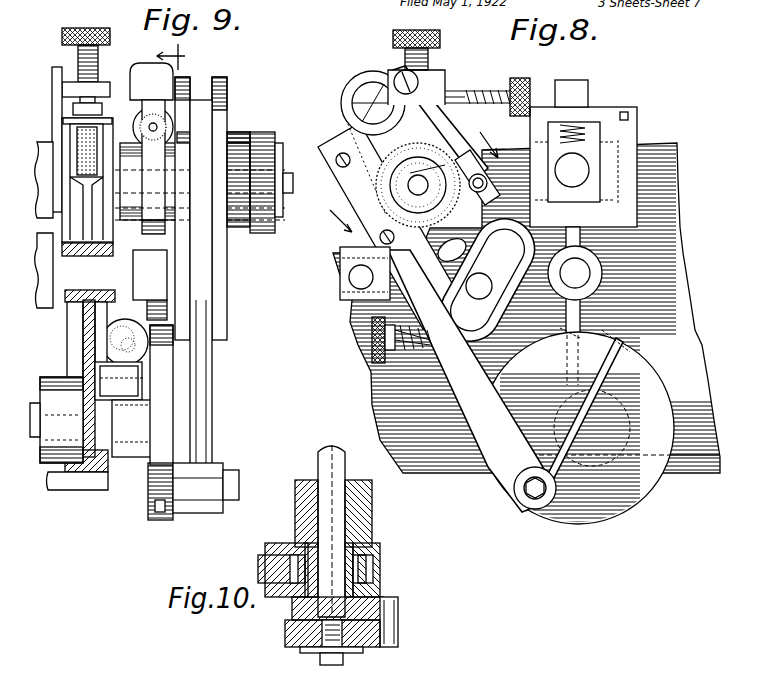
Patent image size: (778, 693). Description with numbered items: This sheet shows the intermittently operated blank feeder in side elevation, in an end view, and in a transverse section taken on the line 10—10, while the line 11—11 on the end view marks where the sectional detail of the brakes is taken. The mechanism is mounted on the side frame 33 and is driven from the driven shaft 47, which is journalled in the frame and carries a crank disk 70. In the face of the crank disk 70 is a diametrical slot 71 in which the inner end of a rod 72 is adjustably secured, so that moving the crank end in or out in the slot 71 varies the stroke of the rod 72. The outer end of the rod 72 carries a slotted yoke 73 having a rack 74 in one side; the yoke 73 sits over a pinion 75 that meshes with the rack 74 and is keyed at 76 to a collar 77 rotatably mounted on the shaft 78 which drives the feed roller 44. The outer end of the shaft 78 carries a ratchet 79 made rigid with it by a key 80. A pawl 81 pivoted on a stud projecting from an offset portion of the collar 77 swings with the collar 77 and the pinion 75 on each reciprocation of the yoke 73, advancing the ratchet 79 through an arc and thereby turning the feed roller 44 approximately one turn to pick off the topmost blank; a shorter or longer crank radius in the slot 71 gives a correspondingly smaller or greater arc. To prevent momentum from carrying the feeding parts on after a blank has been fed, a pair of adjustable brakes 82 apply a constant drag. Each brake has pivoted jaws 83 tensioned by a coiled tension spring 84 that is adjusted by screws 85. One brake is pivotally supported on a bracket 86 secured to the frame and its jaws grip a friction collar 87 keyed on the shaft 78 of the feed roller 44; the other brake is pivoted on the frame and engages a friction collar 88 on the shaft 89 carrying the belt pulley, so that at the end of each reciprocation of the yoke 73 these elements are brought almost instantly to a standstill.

In FIG. 8, the section line 10— 10 is at (412, 185).
In FIG. 9, the section line 11— 11 is at (176, 236).
In FIG. 9, the side frame 33 is at (110, 470).
In FIG. 8, the side frame 33 is at (452, 462).
In FIG. 9, the feed roller 44 is at (45, 142).
In FIG. 9, the driven shaft 47 is at (35, 400).
In FIG. 8, the driven shaft 47 is at (600, 425).
In FIG. 9, the crank disk 70 is at (162, 520).
In FIG. 8, the crank disk 70 is at (598, 510).
In FIG. 9, the diametrical slot 71 is at (160, 503).
In FIG. 8, the diametrical slot 71 is at (622, 352).
In FIG. 9, the rod 72 is at (212, 400).
In FIG. 8, the rod 72 is at (500, 455).
In FIG. 9, the slotted yoke 73 is at (228, 92).
In FIG. 8, the slotted yoke 73 is at (370, 85).
In FIG. 10, the slotted yoke 73 is at (383, 590).
In FIG. 8, the rack 74 is at (340, 142).
In FIG. 10, the rack 74 is at (258, 565).
In FIG. 8, the pinion 75 is at (400, 100).
In FIG. 10, the pinion 75 is at (378, 566).
In FIG. 10, the key 76 is at (372, 556).
In FIG. 9, the collar 77 is at (237, 132).
In FIG. 10, the collar 77 is at (292, 612).
In FIG. 10, the shaft 78 is at (325, 467).
In FIG. 9, the ratchet 79 is at (262, 130).
In FIG. 8, the ratchet 79 is at (360, 196).
In FIG. 10, the ratchet 79 is at (370, 650).
In FIG. 8, the key 80 is at (380, 88).
In FIG. 10, the key 80 is at (350, 653).
In FIG. 8, the pawl 81 is at (455, 130).
In FIG. 10, the pawl 81 is at (398, 635).
In FIG. 9, the adjustable brakes 82 is at (167, 230).
In FIG. 8, the adjustable brakes 82 is at (535, 268).
In FIG. 8, the pivoted jaws 83 is at (360, 274).
In FIG. 8, the coiled tension spring 84 is at (410, 350).
In FIG. 9, the screws 85 is at (102, 343).
In FIG. 8, the screws 85 is at (378, 363).
In FIG. 9, the bracket 86 is at (130, 80).
In FIG. 9, the friction collar 87 is at (138, 182).
In FIG. 10, the friction collar 87 is at (372, 507).
In FIG. 9, the friction collar 88 is at (150, 273).
In FIG. 8, the friction collar 88 is at (484, 280).
In FIG. 8, the shaft 89 is at (468, 284).